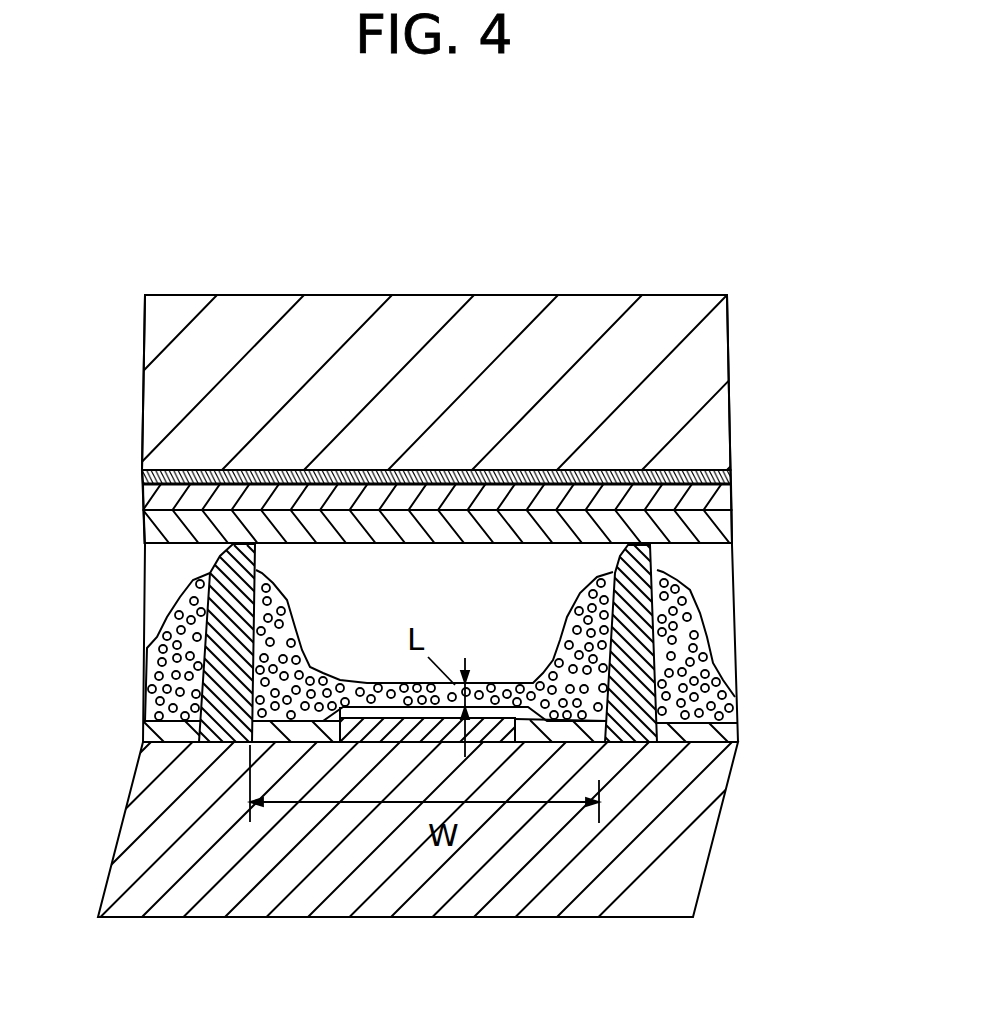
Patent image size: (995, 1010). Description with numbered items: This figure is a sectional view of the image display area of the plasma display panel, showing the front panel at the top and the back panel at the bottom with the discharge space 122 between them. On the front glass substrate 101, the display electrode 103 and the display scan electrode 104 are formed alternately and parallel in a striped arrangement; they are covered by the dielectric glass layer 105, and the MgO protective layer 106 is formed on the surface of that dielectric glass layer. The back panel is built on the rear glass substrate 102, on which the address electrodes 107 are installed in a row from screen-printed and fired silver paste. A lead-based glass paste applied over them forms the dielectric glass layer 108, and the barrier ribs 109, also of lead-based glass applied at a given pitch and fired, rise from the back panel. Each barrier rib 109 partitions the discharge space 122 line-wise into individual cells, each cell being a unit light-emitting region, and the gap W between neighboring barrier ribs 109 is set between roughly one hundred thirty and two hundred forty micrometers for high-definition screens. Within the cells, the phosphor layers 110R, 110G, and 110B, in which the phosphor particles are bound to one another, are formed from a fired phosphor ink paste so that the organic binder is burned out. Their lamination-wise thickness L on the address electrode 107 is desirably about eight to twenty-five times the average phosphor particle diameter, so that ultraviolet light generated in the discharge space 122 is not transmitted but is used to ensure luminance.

The front glass substrate 101 is at (713, 375).
The rear glass substrate 102 is at (700, 827).
The display electrode 103 is at (515, 463).
The display scan electrode 104 is at (725, 475).
The dielectric glass layer 105 is at (725, 505).
The MgO protective layer 106 is at (732, 532).
The address electrode 107 is at (322, 735).
The dielectric glass layer 108 is at (330, 662).
The barrier rib 109 is at (628, 565).
The phosphor layer 110R is at (157, 655).
The phosphor layer 110G is at (550, 712).
The phosphor layer 110B is at (713, 690).
The discharge space 122 is at (550, 607).